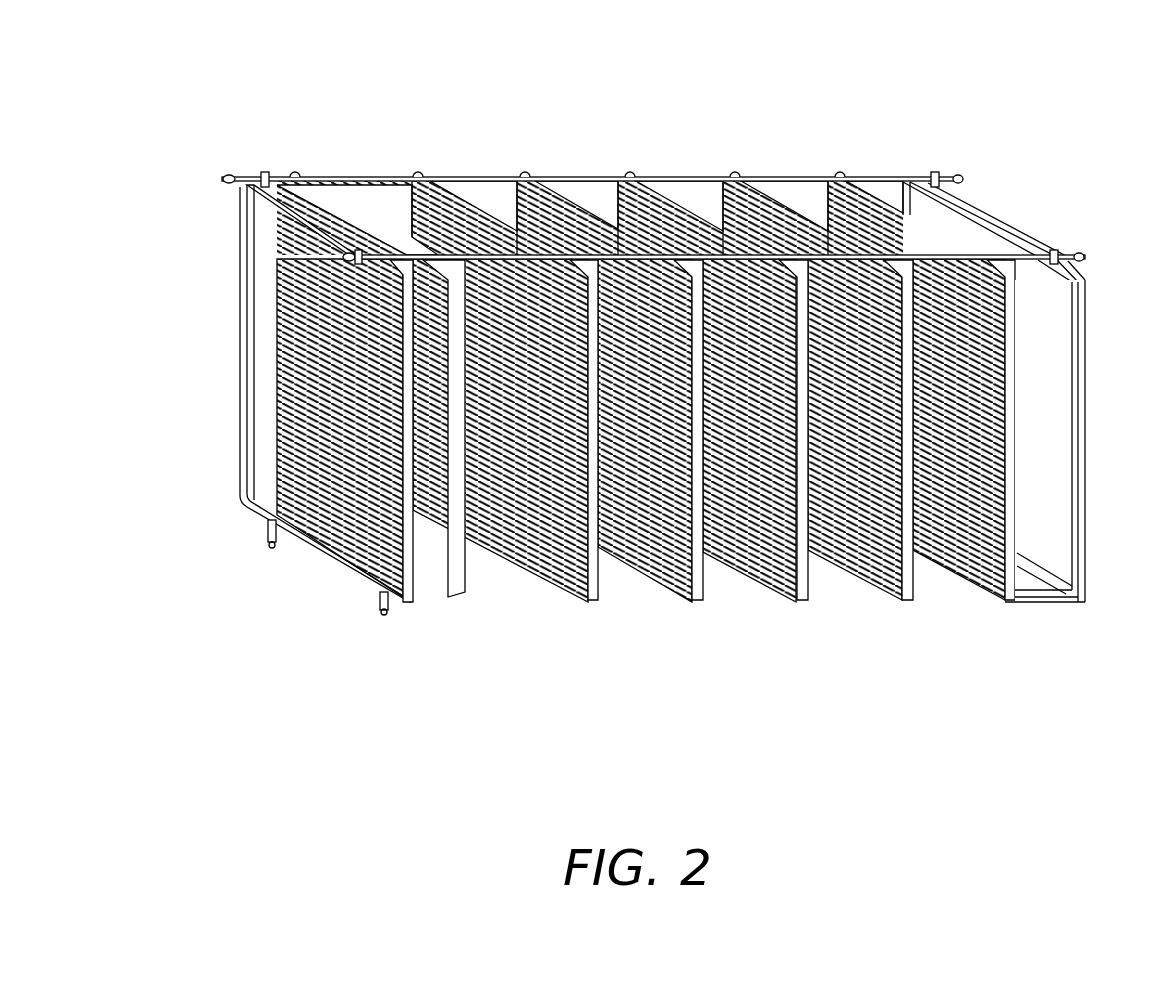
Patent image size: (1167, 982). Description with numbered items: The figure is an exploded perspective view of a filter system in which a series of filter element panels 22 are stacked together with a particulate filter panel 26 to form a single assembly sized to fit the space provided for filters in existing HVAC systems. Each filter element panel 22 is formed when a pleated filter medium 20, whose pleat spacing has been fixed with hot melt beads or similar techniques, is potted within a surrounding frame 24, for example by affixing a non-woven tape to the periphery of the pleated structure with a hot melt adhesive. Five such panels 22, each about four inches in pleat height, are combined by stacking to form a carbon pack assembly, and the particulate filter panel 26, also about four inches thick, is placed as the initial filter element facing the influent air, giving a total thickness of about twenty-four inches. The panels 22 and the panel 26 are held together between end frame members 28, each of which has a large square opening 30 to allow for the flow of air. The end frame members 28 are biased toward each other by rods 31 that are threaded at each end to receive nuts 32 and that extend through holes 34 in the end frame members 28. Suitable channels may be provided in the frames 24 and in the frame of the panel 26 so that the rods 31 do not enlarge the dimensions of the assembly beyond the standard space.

The filter medium 20 is at (641, 414).
The filter element panel 22 is at (607, 112).
The frame 24 is at (825, 473).
The particulate filter panel 26 is at (475, 473).
The end frame member 28 is at (644, 378).
The large square opening 30 is at (643, 463).
The rod 31 is at (685, 224).
The nut 32 is at (652, 154).
The hole 34 is at (659, 398).